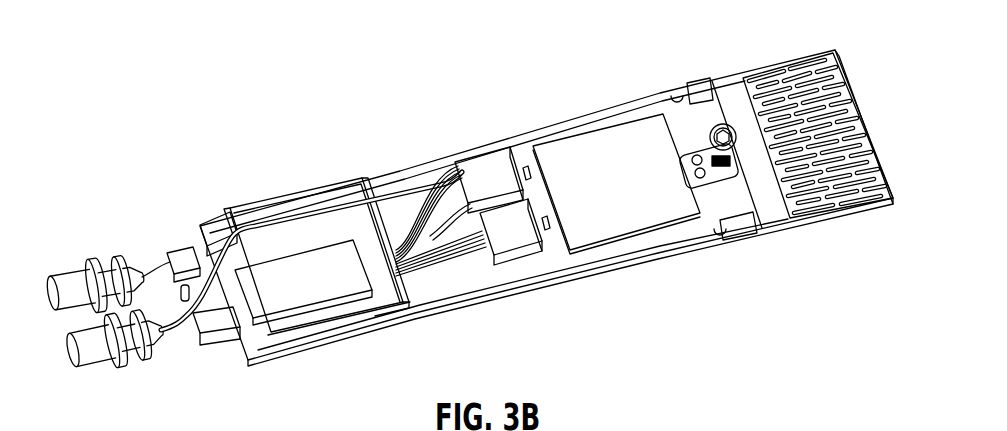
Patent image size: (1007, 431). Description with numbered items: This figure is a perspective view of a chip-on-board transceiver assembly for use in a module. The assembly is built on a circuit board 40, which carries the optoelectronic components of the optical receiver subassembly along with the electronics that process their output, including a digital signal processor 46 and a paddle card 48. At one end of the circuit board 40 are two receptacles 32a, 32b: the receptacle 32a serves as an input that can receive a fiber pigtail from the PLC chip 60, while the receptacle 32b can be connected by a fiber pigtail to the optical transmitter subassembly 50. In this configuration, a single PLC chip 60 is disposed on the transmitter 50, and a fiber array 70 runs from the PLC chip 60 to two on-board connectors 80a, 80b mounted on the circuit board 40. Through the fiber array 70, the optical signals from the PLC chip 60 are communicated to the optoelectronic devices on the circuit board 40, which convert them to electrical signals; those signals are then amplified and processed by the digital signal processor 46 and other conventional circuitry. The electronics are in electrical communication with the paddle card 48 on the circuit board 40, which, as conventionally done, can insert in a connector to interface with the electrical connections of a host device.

The receptacle 32a is at (125, 370).
The receptacle 32b is at (90, 254).
The circuit board 40 is at (600, 112).
The digital signal processor 46 is at (603, 213).
The paddle card 48 is at (828, 52).
The optical transmitter subassembly 50 is at (290, 188).
The PLC chip 60 is at (305, 306).
The fiber array 70 is at (437, 177).
The on-board connector 80a is at (480, 157).
The on-board connector 80b is at (518, 193).